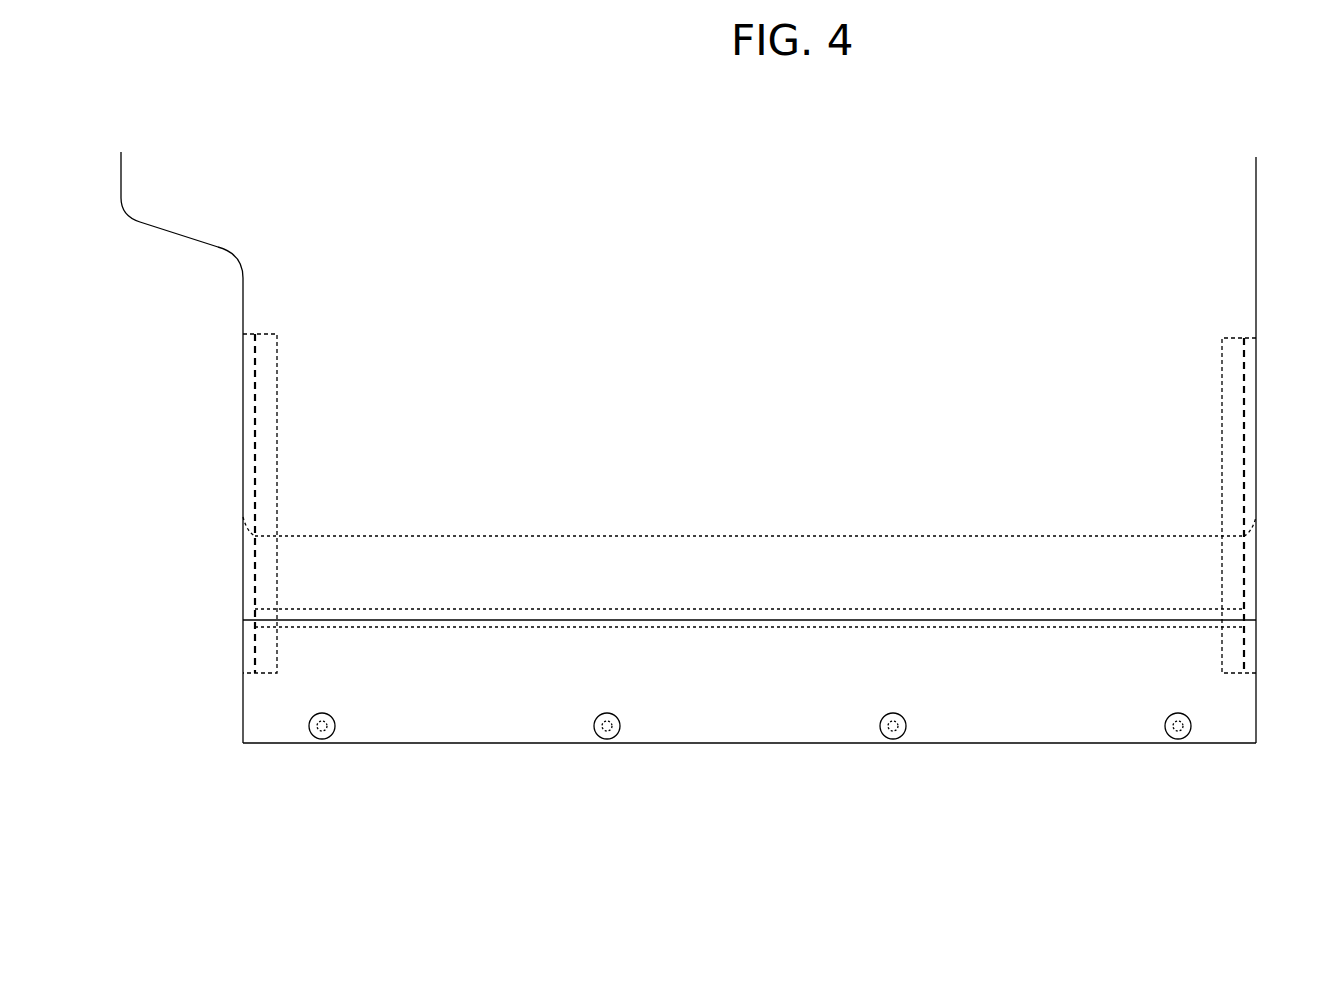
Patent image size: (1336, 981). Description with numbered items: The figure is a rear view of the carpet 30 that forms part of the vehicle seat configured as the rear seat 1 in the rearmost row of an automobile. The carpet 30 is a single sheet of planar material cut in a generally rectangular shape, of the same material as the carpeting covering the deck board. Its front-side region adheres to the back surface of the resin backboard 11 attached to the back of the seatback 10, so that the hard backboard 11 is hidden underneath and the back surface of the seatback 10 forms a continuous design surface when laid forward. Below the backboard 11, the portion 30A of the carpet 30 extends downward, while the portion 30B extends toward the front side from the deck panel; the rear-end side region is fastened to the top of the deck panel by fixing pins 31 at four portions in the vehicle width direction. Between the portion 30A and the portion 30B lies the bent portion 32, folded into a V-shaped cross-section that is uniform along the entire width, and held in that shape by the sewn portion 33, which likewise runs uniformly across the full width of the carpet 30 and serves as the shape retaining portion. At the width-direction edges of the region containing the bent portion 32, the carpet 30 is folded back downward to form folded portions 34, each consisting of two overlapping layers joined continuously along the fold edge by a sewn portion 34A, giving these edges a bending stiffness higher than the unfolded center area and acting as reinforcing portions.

The rear seat 1 is at (726, 422).
The seatback 10 is at (1169, 120).
The backboard 11 is at (1198, 204).
The carpet 30 is at (1198, 250).
The portion of the carpet extending downward from the backboard 30A is at (1200, 558).
The portion of the carpet extending toward the front side from the deck panel 30B is at (1178, 699).
The fixing pins 31 is at (325, 731).
The bent portion 32 is at (908, 619).
The sewn portion 33 is at (749, 618).
The folded portions 34 is at (262, 584).
The sewn portion 34A is at (255, 603).